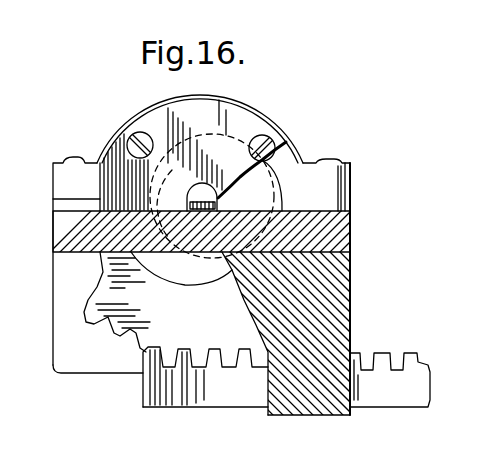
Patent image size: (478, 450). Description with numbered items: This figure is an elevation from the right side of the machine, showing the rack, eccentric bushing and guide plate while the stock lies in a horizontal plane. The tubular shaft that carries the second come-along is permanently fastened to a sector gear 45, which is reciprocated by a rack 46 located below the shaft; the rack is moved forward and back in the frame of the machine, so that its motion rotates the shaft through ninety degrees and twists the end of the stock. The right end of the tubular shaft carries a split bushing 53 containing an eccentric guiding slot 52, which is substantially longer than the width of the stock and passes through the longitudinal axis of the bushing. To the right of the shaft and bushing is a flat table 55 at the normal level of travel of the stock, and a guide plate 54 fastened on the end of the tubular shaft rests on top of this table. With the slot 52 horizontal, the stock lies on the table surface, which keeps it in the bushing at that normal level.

The sector gear 45 is at (147, 312).
The rack 46 is at (160, 382).
The eccentric guiding slot 52 is at (172, 165).
The split bushing 53 is at (230, 201).
The guide plate 54 is at (240, 118).
The flat table 55 is at (330, 236).